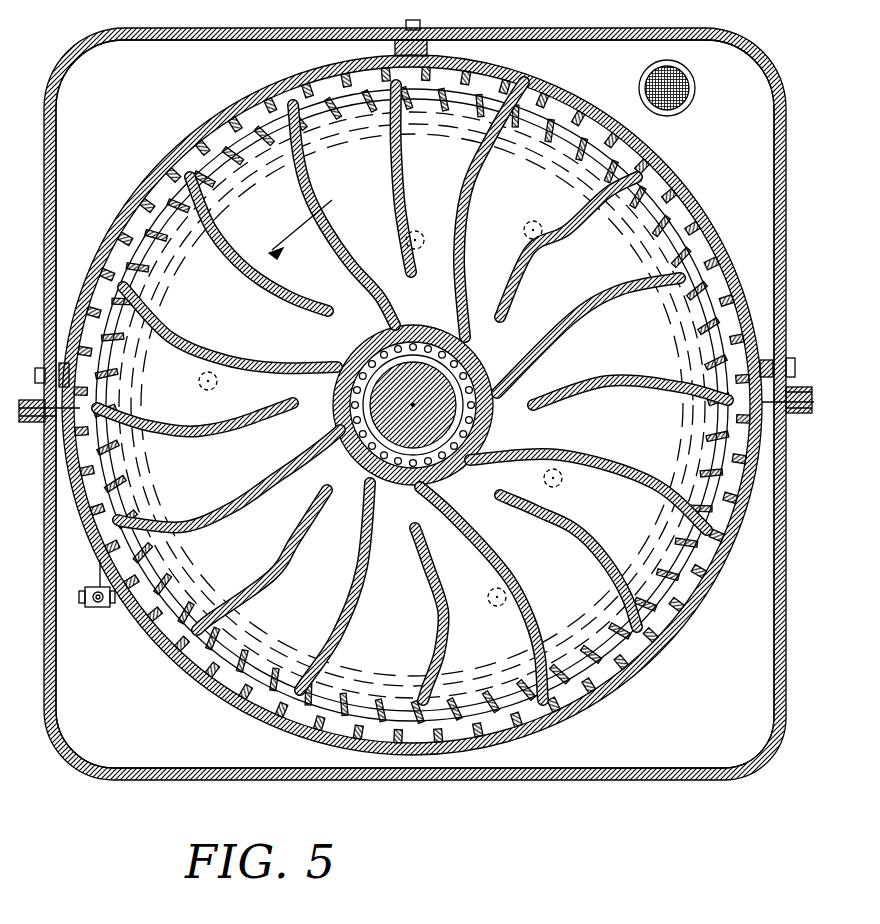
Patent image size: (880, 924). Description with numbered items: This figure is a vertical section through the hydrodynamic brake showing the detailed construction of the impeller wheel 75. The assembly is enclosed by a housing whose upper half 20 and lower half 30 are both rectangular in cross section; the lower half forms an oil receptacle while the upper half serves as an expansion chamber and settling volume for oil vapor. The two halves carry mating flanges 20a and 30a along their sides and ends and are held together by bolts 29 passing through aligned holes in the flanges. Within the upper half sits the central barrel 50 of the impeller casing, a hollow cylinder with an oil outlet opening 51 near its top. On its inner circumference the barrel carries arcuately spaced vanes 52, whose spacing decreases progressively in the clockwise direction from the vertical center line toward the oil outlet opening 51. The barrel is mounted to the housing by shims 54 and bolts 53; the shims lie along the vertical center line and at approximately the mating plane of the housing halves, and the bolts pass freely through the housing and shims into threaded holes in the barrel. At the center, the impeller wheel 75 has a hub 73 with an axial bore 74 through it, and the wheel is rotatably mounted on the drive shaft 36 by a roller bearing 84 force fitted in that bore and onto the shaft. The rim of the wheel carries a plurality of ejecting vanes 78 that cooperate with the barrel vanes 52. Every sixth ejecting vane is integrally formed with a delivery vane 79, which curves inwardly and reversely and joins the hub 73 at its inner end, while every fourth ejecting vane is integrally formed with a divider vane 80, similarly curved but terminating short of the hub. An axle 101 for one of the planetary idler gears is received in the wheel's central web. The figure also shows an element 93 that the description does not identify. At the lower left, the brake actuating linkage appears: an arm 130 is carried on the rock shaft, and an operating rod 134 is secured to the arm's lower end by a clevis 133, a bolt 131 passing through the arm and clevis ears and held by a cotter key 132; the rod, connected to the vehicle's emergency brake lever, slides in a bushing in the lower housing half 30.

The upper half of housing 20 is at (622, 32).
The mating flange 20a is at (34, 376).
The bolts 29 is at (795, 386).
The lower half of housing 30 is at (682, 781).
The mating flange 30a is at (40, 432).
The drive shaft 36 is at (372, 350).
The central barrel 50 is at (490, 60).
The oil outlet opening 51 is at (280, 78).
The arcuately spaced vanes 52 is at (536, 80).
The bolts 53 is at (408, 24).
The shims 54 is at (428, 40).
The hub 73 is at (438, 322).
The axial bore 74 is at (468, 338).
The impeller wheel 75 is at (574, 104).
The ejecting vanes 78 is at (362, 112).
The delivery vanes 79 is at (310, 216).
The divider vanes 80 is at (406, 194).
The roller bearing 84 is at (356, 449).
The bearing 93 is at (494, 410).
The axle 101 is at (422, 234).
The arm 130 is at (100, 558).
The bolt 131 is at (110, 606).
The cotter key 132 is at (84, 592).
The clevis 133 is at (113, 606).
The operating rod 134 is at (92, 606).